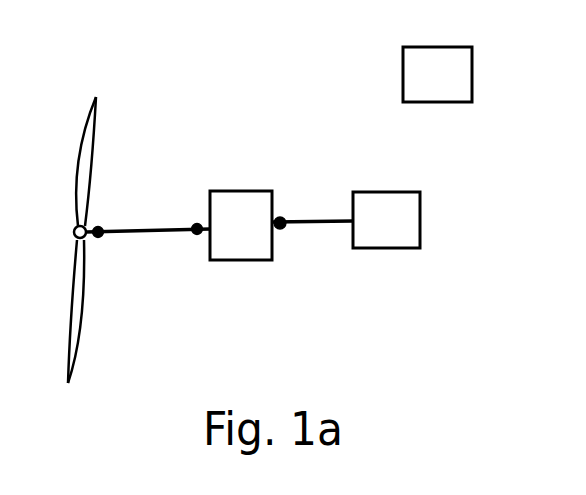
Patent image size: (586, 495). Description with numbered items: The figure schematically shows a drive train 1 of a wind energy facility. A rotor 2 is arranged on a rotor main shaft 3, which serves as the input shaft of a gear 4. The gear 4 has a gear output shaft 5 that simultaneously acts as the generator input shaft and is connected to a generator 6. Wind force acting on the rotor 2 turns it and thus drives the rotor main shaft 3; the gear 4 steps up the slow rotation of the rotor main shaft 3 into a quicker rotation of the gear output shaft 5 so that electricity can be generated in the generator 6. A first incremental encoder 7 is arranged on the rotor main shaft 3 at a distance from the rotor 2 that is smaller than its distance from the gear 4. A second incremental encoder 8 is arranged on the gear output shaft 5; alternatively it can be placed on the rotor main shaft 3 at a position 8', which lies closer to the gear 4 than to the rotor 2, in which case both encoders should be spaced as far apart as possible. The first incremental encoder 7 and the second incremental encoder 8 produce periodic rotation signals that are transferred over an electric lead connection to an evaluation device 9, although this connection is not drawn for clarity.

The drive train 1 is at (267, 74).
The rotor 2 is at (98, 113).
The rotor main shaft 3 is at (112, 227).
The gear 4 is at (250, 242).
The gear output shaft 5 is at (298, 220).
The generator 6 is at (395, 237).
The first incremental encoder 7 is at (104, 236).
The second incremental encoder 8 is at (298, 246).
The position 8' is at (203, 267).
The evaluation device 9 is at (447, 89).